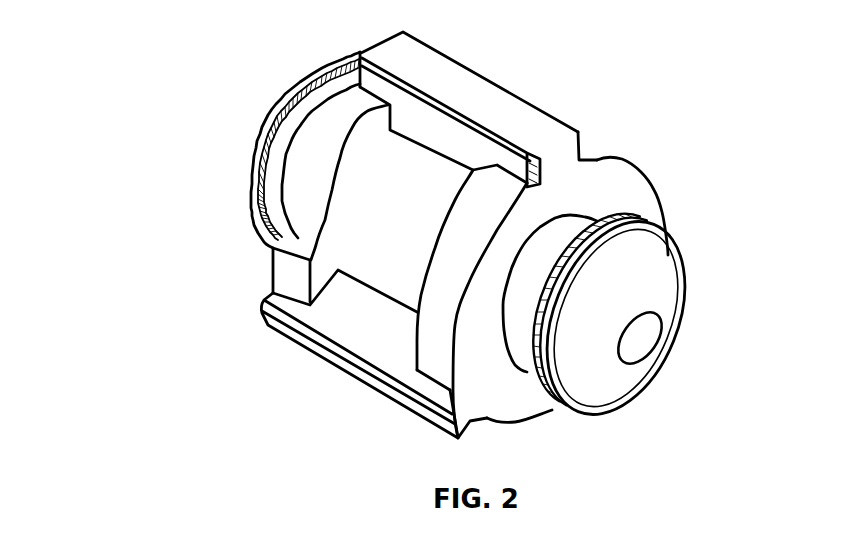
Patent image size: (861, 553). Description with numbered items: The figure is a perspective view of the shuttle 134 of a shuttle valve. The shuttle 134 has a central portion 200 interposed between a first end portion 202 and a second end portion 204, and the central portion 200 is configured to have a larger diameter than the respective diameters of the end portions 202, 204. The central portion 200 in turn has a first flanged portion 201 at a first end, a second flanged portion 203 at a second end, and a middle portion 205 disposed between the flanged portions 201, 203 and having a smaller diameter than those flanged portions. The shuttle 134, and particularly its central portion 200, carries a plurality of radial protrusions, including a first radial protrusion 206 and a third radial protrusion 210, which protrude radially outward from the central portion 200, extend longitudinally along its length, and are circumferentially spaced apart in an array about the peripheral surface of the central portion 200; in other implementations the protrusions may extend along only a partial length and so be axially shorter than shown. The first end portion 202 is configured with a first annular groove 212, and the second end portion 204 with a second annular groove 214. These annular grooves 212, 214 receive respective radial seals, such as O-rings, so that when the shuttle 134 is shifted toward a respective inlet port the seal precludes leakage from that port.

The shuttle 134 is at (135, 95).
The central portion 200 is at (373, 183).
The first flanged portion 201 is at (640, 170).
The first end portion 202 is at (630, 398).
The second flanged portion 203 is at (295, 198).
The second end portion 204 is at (250, 213).
The middle portion 205 is at (393, 253).
The first radial protrusion 206 is at (523, 132).
The third radial protrusion 210 is at (310, 353).
The first annular groove 212 is at (595, 222).
The second annular groove 214 is at (327, 103).